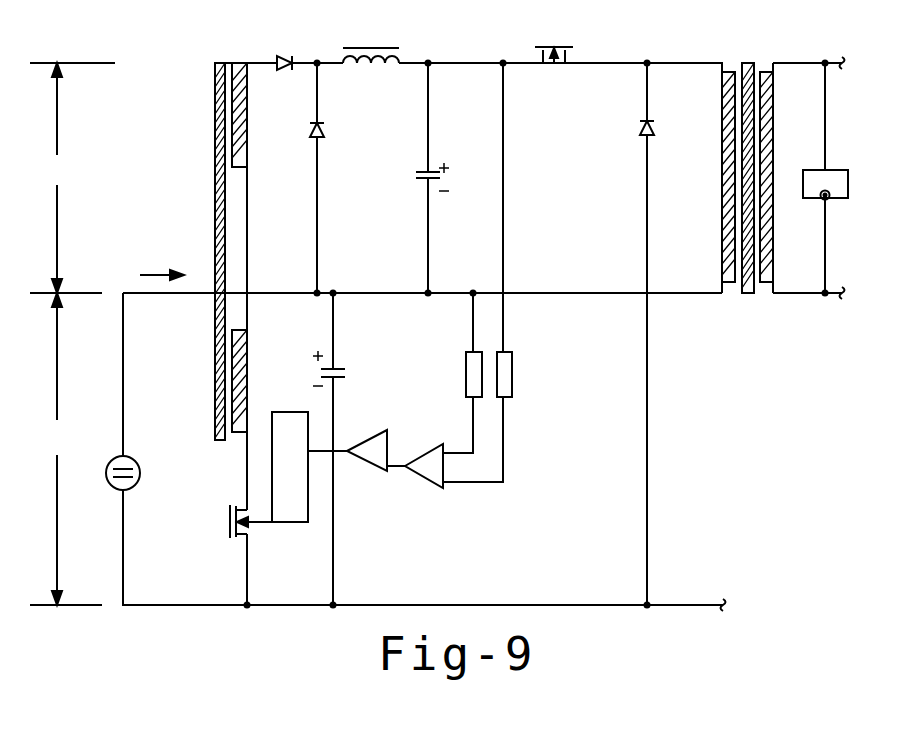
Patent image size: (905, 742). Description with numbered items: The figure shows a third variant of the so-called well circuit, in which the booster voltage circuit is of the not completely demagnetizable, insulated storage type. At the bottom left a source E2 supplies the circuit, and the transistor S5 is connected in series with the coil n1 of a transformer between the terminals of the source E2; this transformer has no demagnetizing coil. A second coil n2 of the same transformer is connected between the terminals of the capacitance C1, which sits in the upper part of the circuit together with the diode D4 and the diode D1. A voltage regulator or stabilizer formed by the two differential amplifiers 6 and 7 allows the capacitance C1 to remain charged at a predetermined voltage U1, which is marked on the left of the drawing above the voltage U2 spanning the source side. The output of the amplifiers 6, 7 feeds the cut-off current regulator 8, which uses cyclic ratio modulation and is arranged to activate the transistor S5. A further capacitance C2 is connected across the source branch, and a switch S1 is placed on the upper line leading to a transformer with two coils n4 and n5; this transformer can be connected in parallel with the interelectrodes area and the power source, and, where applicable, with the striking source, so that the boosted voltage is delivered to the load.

The coil n1 is at (247, 417).
The second coil n2 is at (247, 149).
The coil n4 is at (721, 149).
The coil n5 is at (775, 149).
The diode D1 is at (628, 134).
The diode D4 is at (335, 134).
The capacitance C1 is at (421, 176).
The capacitance C2 is at (345, 370).
The switch S1 is at (554, 36).
The transistor S5 is at (240, 537).
The source E2 is at (108, 479).
The predetermined voltage U1 is at (72, 178).
The voltage U2 is at (66, 449).
The differential amplifier 6 is at (420, 479).
The differential amplifier 7 is at (372, 466).
The cut-off current regulator 8 is at (290, 522).